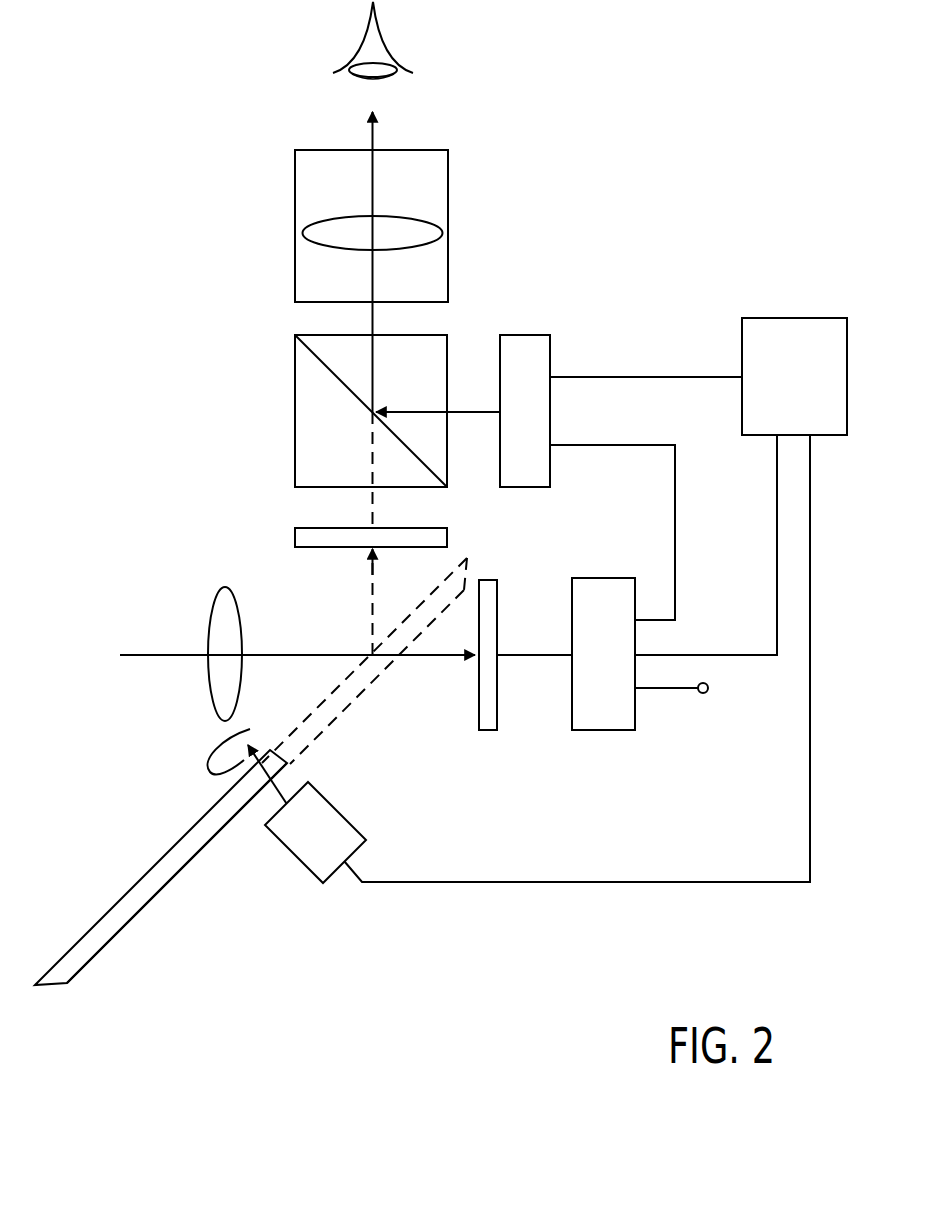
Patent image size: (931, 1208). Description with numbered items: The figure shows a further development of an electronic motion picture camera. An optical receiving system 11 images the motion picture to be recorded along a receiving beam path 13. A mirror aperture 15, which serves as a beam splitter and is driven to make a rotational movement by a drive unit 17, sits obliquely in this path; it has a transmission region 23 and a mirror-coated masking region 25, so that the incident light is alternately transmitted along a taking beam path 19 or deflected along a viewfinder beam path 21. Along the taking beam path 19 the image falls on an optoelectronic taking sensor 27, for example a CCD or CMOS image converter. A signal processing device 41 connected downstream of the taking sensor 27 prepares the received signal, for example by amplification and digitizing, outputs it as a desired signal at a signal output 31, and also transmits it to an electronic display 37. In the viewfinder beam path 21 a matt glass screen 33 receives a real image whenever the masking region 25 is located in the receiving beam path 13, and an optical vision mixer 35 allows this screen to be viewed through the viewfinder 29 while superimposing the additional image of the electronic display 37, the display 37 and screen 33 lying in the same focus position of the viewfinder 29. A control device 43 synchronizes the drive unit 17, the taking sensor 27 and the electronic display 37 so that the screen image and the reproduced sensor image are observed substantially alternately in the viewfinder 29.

The optical receiving system 11 is at (207, 620).
The receiving beam path 13 is at (300, 655).
The mirror aperture 15 is at (129, 924).
The drive unit 17 is at (312, 873).
The taking beam path 19 is at (418, 655).
The viewfinder beam path 21 is at (365, 320).
The transmission region 23 is at (337, 717).
The masking region 25 is at (190, 860).
The taking sensor 27 is at (497, 722).
The viewfinder 29 is at (448, 180).
The signal output 31 is at (705, 693).
The matt glass screen 33 is at (295, 538).
The optical vision mixer 35 is at (295, 405).
The electronic display 37 is at (550, 345).
The signal processing device 41 is at (603, 578).
The control device 43 is at (790, 318).